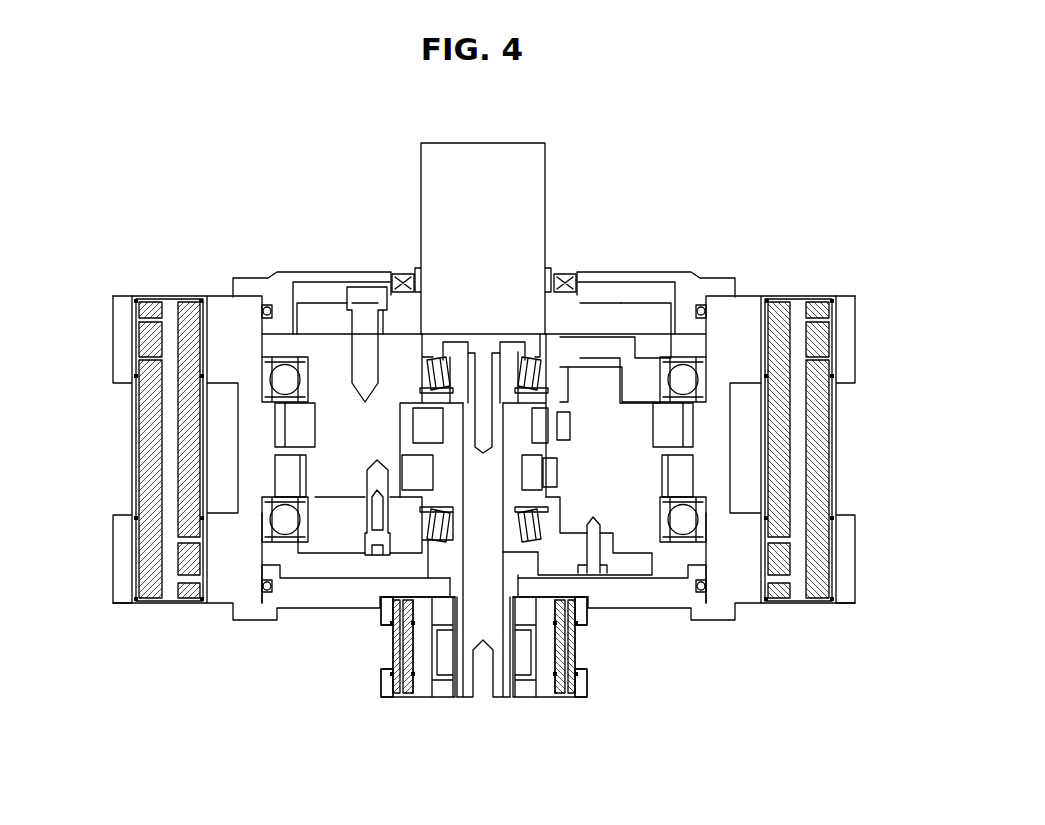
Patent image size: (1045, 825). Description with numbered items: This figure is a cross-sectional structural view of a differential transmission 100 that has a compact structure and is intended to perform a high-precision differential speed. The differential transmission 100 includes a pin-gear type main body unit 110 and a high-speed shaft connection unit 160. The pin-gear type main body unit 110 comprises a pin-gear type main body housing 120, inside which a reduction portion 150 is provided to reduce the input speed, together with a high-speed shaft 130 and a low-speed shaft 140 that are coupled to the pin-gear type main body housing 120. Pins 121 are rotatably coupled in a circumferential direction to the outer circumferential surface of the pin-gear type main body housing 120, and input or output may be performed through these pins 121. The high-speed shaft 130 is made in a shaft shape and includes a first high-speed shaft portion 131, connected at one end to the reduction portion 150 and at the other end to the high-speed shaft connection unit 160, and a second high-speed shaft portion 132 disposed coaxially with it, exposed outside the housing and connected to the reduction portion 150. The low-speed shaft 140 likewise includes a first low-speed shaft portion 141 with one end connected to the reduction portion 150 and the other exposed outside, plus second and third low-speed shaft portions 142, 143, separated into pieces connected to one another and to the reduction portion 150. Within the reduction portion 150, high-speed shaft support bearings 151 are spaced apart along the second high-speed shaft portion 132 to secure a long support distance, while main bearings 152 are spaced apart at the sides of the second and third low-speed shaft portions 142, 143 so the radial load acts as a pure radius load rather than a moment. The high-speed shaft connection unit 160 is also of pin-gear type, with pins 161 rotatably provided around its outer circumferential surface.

The differential transmission 100 is at (184, 126).
The pin-gear type main body unit 110 is at (222, 274).
The pin-gear type main body housing 120 is at (120, 298).
The pins 121 is at (150, 466).
The high-speed shaft 130 is at (497, 699).
The first high-speed shaft portion 131 is at (467, 643).
The second high-speed shaft portion 132 is at (460, 372).
The low-speed shaft 140 is at (552, 212).
The first low-speed shaft portion 141 is at (483, 170).
The second low-speed shaft portion 142 is at (357, 413).
The third low-speed shaft portion 143 is at (328, 522).
The reduction portion 150 is at (658, 565).
The high-speed shaft support bearings 151 is at (542, 372).
The main bearings 152 is at (287, 378).
The high-speed shaft connection unit 160 is at (582, 699).
The pins 161 is at (408, 698).